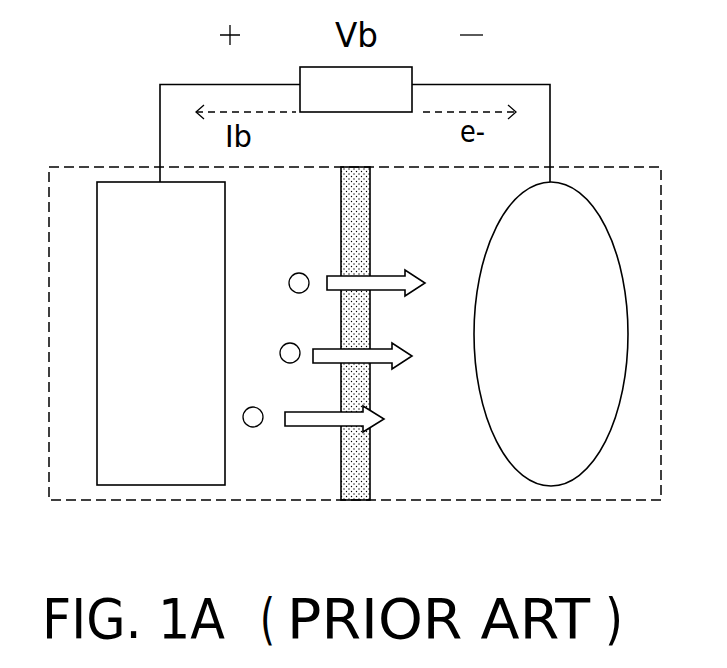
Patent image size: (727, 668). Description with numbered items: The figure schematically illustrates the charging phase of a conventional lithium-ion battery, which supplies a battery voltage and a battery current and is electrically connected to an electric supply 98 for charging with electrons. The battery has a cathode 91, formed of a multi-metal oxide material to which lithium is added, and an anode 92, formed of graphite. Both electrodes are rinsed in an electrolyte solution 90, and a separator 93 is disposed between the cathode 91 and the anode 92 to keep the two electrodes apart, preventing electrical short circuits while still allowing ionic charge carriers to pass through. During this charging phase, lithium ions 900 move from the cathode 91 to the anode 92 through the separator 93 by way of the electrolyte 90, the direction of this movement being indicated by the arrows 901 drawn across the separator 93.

The electrolyte solution 90 is at (620, 188).
The cathode 91 is at (153, 472).
The anode 92 is at (550, 472).
The separator 93 is at (355, 488).
The electric supply 98 is at (412, 78).
The lithium ions 900 is at (304, 273).
The arrows 901 is at (406, 272).